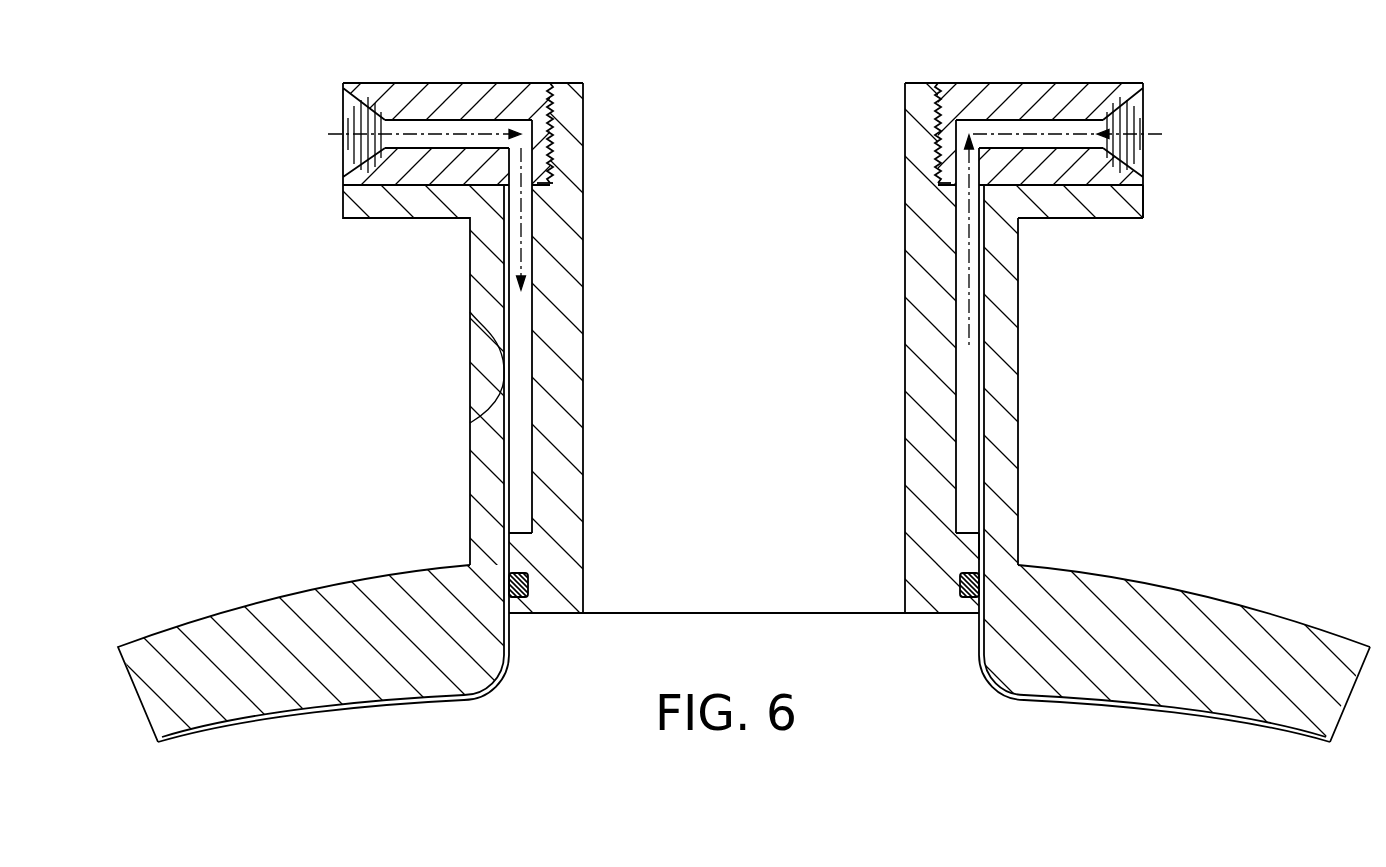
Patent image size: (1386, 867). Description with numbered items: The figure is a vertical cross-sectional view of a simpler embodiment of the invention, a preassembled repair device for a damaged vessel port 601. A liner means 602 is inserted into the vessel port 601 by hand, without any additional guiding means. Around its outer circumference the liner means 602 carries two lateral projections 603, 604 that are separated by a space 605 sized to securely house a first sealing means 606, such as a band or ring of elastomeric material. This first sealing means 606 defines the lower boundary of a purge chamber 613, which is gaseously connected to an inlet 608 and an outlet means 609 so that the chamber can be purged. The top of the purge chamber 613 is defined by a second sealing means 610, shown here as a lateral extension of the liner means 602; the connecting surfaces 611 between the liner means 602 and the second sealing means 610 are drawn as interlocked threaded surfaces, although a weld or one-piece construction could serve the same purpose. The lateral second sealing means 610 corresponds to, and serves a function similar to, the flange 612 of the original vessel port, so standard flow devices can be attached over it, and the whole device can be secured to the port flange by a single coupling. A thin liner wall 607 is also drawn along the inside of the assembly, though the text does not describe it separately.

The vessel port 601 is at (478, 378).
The liner means 602 is at (598, 303).
The lateral projection 603 is at (975, 614).
The lateral projection 604 is at (968, 532).
The space 605 is at (965, 578).
The first sealing means 606 is at (1020, 566).
The liner 607 is at (990, 432).
The inlet 608 is at (322, 155).
The outlet means 609 is at (1162, 121).
The second sealing means 610 is at (528, 82).
The connecting surfaces 611 is at (550, 83).
The flange 612 is at (1052, 218).
The purge chamber 613 is at (973, 372).